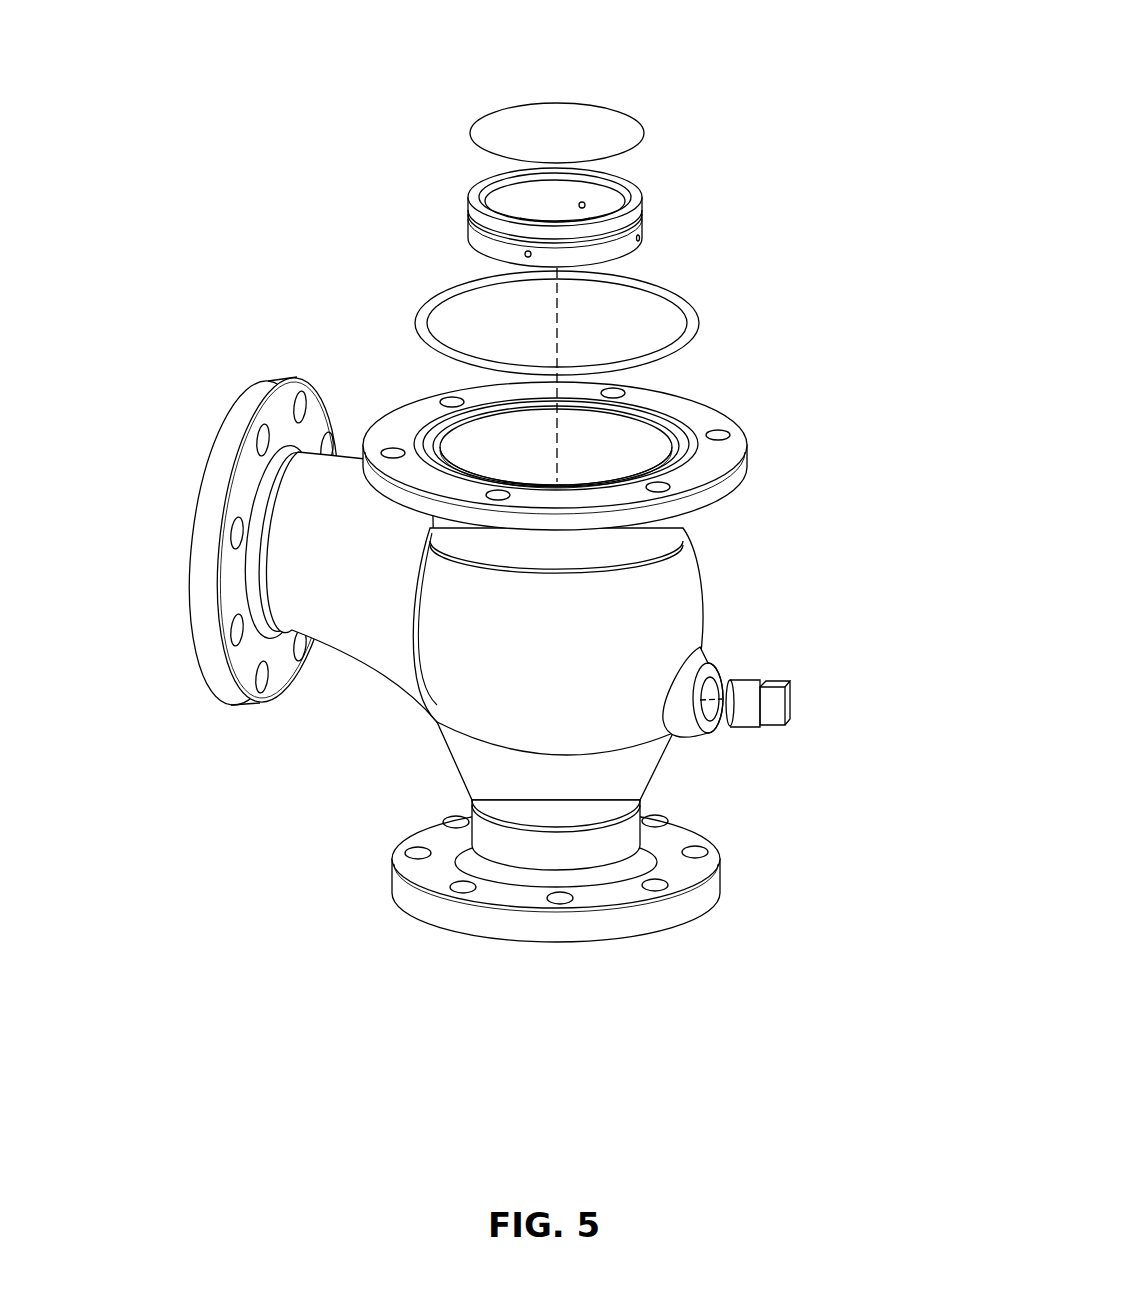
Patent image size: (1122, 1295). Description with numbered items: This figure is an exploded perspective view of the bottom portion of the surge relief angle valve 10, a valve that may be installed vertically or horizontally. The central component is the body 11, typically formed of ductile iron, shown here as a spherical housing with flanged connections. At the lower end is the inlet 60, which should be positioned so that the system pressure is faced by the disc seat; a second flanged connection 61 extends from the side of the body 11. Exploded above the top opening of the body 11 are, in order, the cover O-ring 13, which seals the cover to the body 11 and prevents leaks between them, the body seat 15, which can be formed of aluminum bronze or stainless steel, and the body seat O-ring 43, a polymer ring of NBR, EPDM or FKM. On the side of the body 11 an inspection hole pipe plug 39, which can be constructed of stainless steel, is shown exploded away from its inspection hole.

The surge relief angle valve 10 is at (740, 222).
The body 11 is at (670, 620).
The cover O-ring 13 is at (422, 322).
The body seat 15 is at (473, 225).
The inspection hole pipe plug 39 is at (780, 710).
The body seat O-ring 43 is at (622, 112).
The inlet 60 is at (607, 940).
The inlet flange 61 is at (193, 517).